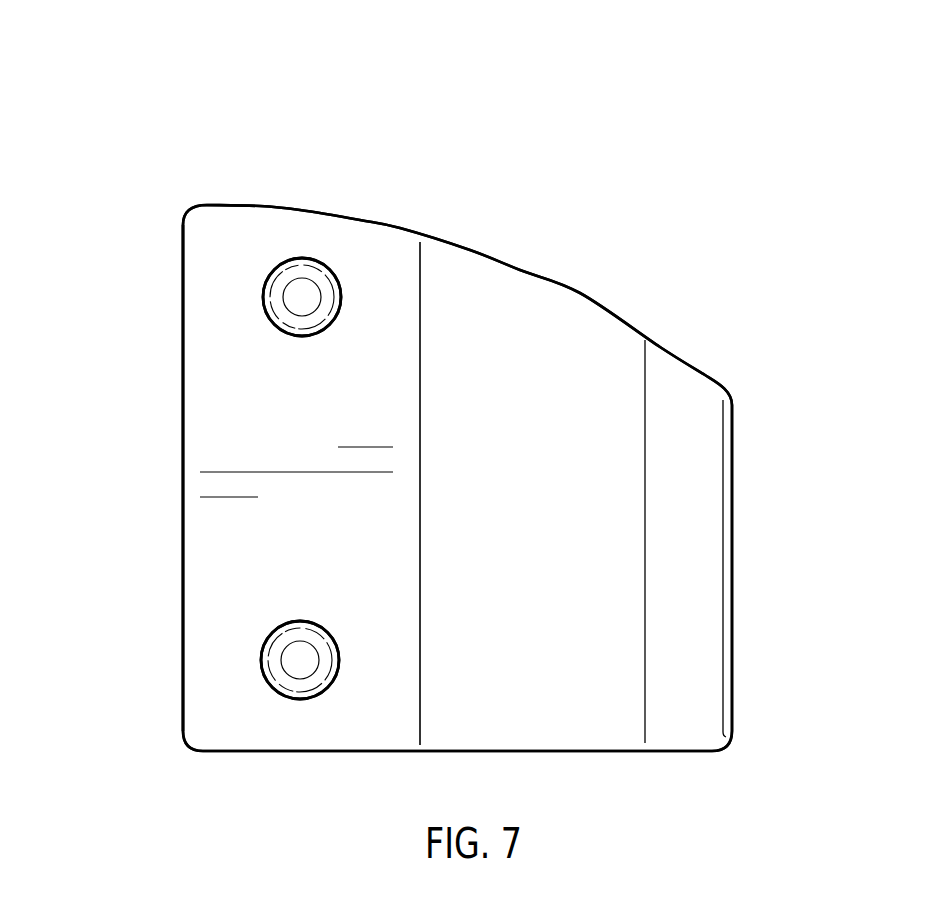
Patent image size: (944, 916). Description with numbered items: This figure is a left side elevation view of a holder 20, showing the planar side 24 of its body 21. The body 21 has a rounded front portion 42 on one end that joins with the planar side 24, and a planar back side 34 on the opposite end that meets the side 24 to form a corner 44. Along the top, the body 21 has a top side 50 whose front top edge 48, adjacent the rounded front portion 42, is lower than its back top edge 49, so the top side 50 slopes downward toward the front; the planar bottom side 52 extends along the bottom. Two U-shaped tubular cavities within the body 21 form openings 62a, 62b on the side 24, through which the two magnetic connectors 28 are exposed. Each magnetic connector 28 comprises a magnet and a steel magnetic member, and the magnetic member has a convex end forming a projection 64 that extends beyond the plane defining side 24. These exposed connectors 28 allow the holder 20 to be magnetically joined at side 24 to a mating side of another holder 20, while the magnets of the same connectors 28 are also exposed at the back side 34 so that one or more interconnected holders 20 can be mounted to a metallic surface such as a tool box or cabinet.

The holder 20 is at (508, 84).
The body 21 is at (179, 265).
The side 24 is at (220, 407).
The back side 34 is at (181, 550).
The corner 44 is at (181, 636).
The magnetic connector 28 is at (324, 336).
The rounded front portion 42 is at (733, 525).
The front top edge 48 is at (715, 378).
The back top edge 49 is at (207, 203).
The top side 50 is at (480, 248).
The bottom side 52 is at (600, 753).
The opening 62a is at (263, 300).
The opening 62b is at (261, 662).
The projection 64 is at (298, 297).